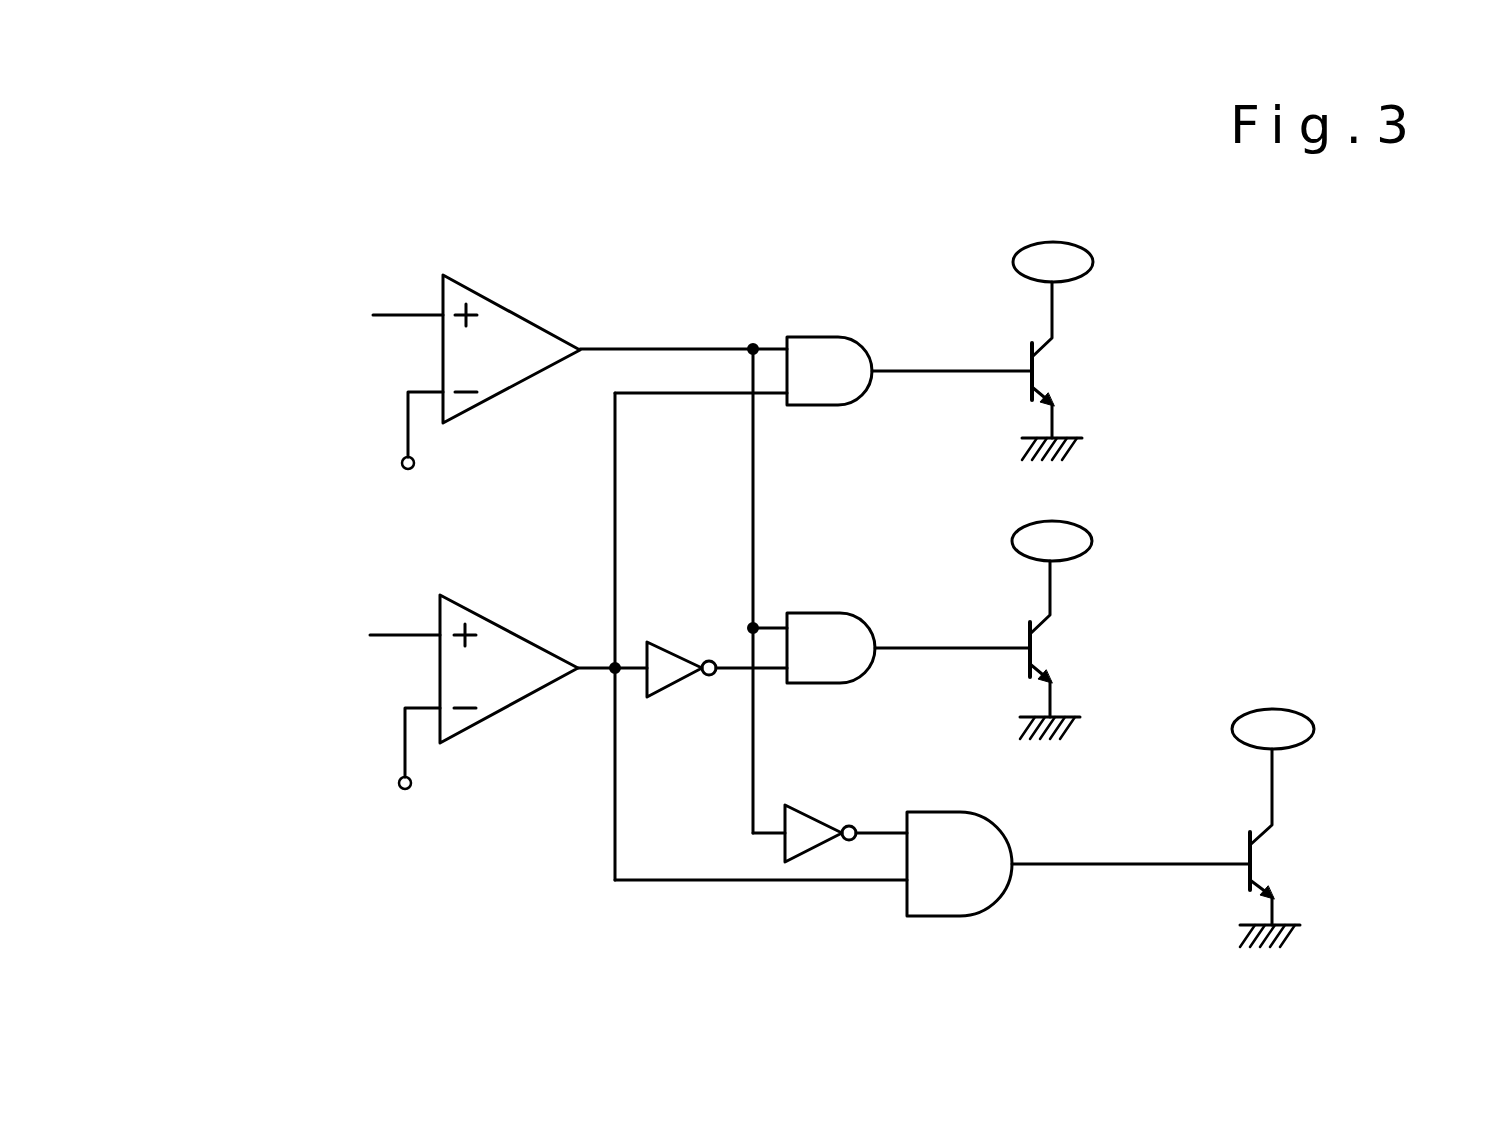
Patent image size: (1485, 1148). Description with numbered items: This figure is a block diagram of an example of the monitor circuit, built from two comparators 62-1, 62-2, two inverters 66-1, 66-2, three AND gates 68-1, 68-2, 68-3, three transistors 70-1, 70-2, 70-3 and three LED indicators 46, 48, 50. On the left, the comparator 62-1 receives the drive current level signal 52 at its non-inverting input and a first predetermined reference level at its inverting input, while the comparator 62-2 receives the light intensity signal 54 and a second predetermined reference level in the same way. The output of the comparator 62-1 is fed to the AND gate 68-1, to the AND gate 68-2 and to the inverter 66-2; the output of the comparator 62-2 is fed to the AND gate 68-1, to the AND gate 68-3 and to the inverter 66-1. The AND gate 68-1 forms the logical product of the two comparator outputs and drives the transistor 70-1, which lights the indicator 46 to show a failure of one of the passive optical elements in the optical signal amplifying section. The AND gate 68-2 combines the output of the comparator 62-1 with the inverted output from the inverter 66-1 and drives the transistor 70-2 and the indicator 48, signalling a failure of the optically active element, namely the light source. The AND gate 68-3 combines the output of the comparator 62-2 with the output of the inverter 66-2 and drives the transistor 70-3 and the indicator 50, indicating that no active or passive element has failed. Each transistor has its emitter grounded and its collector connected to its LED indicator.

The indicator 46 is at (1090, 270).
The indicator 48 is at (1088, 552).
The indicator 50 is at (1270, 708).
The drive current level signal 52 is at (304, 324).
The light intensity signal 54 is at (302, 637).
The comparator 62-1 is at (505, 390).
The comparator 62-2 is at (483, 718).
The inverter 66-1 is at (672, 685).
The inverter 66-2 is at (795, 808).
The AND gate 68-1 is at (828, 337).
The AND gate 68-2 is at (862, 617).
The AND gate 68-3 is at (988, 815).
The transistor 70-1 is at (1065, 378).
The transistor 70-2 is at (1090, 653).
The transistor 70-3 is at (1285, 863).